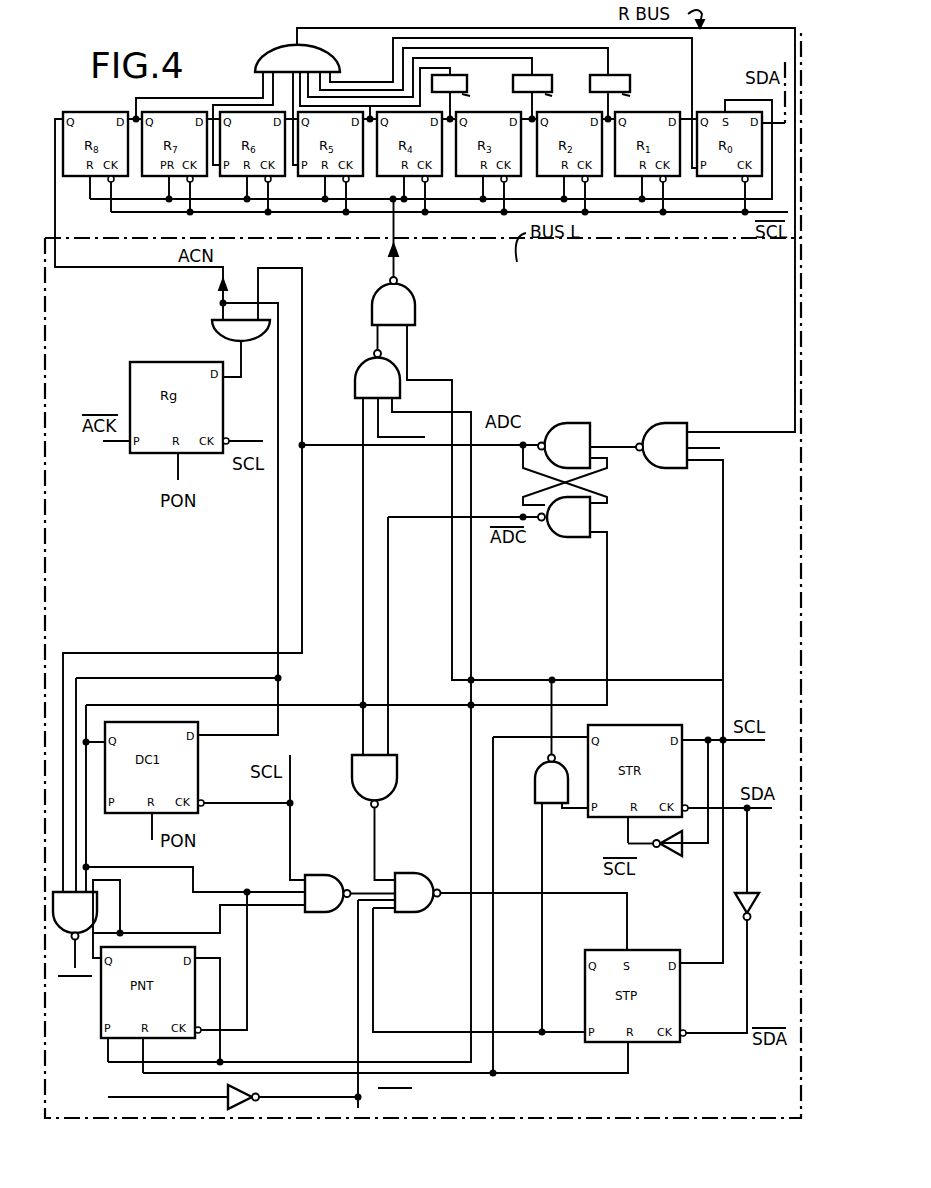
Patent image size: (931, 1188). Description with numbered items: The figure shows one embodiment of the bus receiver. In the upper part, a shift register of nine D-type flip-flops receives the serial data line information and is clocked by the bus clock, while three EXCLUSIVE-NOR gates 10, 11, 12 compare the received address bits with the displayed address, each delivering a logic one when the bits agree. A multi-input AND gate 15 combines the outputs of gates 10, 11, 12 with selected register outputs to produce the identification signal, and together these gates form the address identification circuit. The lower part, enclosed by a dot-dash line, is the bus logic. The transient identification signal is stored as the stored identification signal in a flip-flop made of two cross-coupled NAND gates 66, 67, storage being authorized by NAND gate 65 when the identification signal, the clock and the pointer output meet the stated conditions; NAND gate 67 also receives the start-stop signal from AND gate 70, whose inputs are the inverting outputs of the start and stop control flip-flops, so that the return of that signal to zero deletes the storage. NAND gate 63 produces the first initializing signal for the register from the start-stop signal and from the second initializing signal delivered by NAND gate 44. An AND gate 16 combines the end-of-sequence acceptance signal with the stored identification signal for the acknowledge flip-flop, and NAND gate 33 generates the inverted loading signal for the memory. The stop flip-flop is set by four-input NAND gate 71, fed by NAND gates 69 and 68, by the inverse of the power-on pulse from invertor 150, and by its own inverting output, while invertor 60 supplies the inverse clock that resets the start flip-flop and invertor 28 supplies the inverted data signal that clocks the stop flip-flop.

The multi-input AND gate 15 is at (322, 70).
The EXCLUSIVE-NOR gate 12 is at (462, 77).
The EXCLUSIVE-NOR gate 11 is at (547, 77).
The EXCLUSIVE-NOR gate 10 is at (625, 77).
The AND gate 16 is at (228, 330).
The NAND gate 63 is at (408, 298).
The NAND gate 44 is at (367, 380).
The NAND gate 66 is at (570, 430).
The NAND gate 65 is at (668, 426).
The NAND gate 67 is at (575, 538).
The NAND gate 68 is at (385, 782).
The AND gate 70 is at (545, 788).
The NAND gate 69 is at (330, 880).
The NAND gate 71 is at (417, 880).
The invertor 60 is at (672, 860).
The invertor 28 is at (755, 906).
The NAND gate 33 is at (72, 914).
The invertor 150 is at (232, 1092).